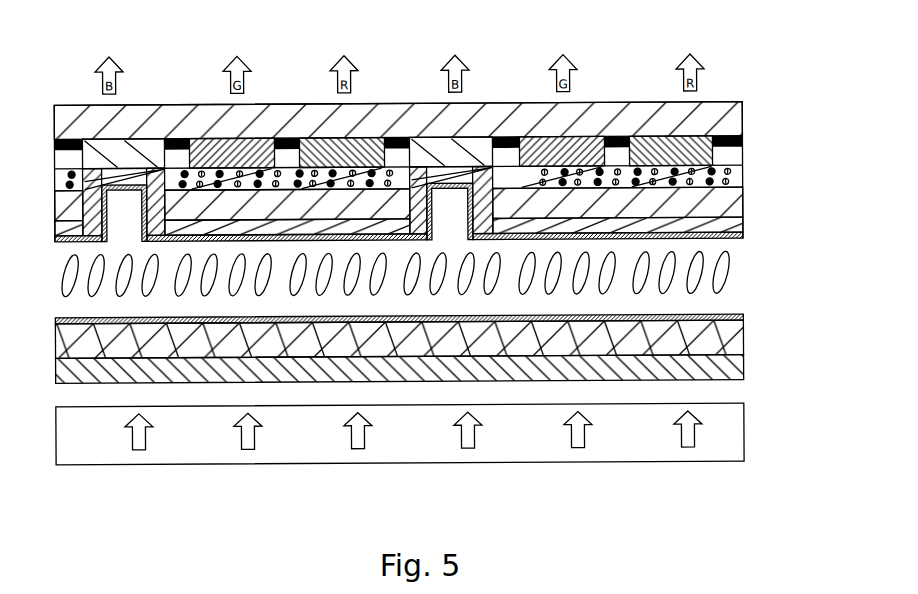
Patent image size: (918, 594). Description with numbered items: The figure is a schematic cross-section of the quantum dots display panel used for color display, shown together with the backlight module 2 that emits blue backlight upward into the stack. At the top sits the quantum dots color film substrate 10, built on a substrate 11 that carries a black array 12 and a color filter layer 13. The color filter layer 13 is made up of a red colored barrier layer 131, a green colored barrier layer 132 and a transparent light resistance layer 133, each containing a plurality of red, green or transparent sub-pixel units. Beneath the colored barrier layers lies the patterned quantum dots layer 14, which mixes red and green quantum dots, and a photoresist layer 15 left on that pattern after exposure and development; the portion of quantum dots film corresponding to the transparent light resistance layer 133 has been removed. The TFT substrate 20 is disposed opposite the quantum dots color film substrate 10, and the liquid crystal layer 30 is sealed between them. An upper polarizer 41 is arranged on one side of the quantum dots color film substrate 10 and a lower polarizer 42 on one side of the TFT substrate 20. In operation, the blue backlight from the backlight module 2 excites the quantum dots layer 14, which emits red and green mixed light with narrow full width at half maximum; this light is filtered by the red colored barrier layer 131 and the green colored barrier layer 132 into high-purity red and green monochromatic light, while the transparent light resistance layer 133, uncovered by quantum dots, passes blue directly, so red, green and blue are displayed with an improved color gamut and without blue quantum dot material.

The backlight module 2 is at (745, 437).
The quantum dots color film substrate 10 is at (446, 130).
The substrate 11 is at (727, 121).
The black array 12 is at (740, 143).
The color filter layer 13 is at (438, 94).
The red colored barrier layer 131 is at (362, 145).
The green colored barrier layer 132 is at (253, 148).
The transparent light resistance layer 133 is at (130, 155).
The quantum dots layer 14 is at (722, 171).
The photoresist layer 15 is at (727, 208).
The TFT substrate 20 is at (720, 346).
The liquid crystal layer 30 is at (730, 288).
The upper polarizer 41 is at (425, 203).
The lower polarizer 42 is at (718, 376).